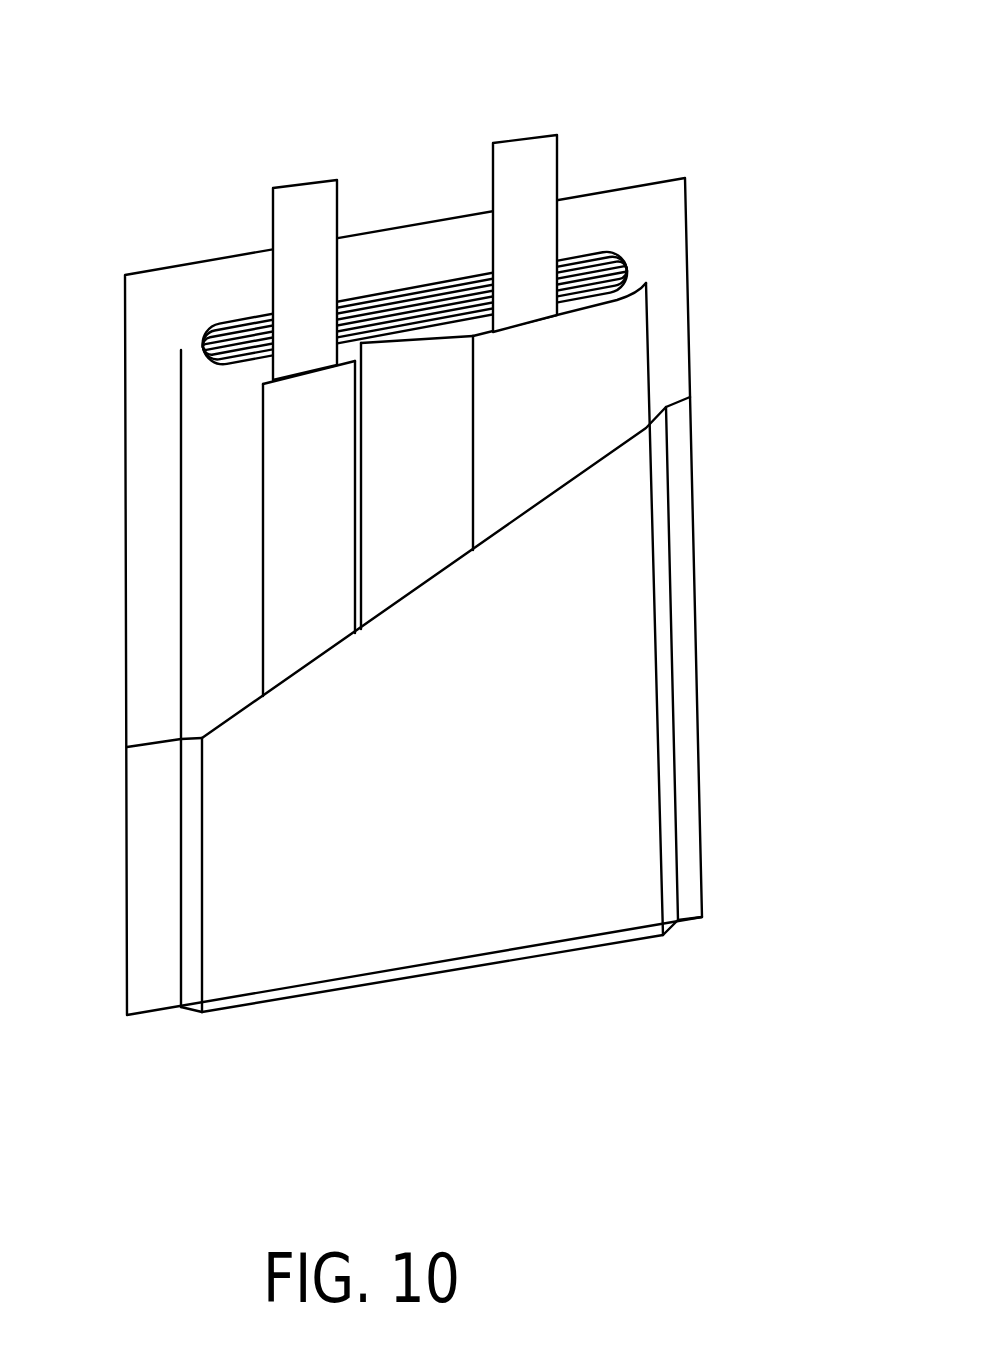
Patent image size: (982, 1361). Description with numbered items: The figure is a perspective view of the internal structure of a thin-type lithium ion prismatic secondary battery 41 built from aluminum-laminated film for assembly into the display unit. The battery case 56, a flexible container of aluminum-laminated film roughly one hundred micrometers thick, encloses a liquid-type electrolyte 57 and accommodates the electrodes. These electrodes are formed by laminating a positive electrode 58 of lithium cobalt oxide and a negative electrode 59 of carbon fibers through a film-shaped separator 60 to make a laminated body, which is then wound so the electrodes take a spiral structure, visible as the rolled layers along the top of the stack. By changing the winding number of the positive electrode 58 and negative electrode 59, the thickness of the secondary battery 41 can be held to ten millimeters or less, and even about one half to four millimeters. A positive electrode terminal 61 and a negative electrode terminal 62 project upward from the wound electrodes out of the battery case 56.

The thin-type secondary battery 41 is at (654, 169).
The battery case 56 is at (618, 615).
The liquid-type electrolyte 57 is at (230, 677).
The positive electrode 58 is at (582, 377).
The negative electrode 59 is at (257, 418).
The separator 60 is at (212, 513).
The positive electrode terminal 61 is at (525, 143).
The negative electrode terminal 62 is at (308, 183).